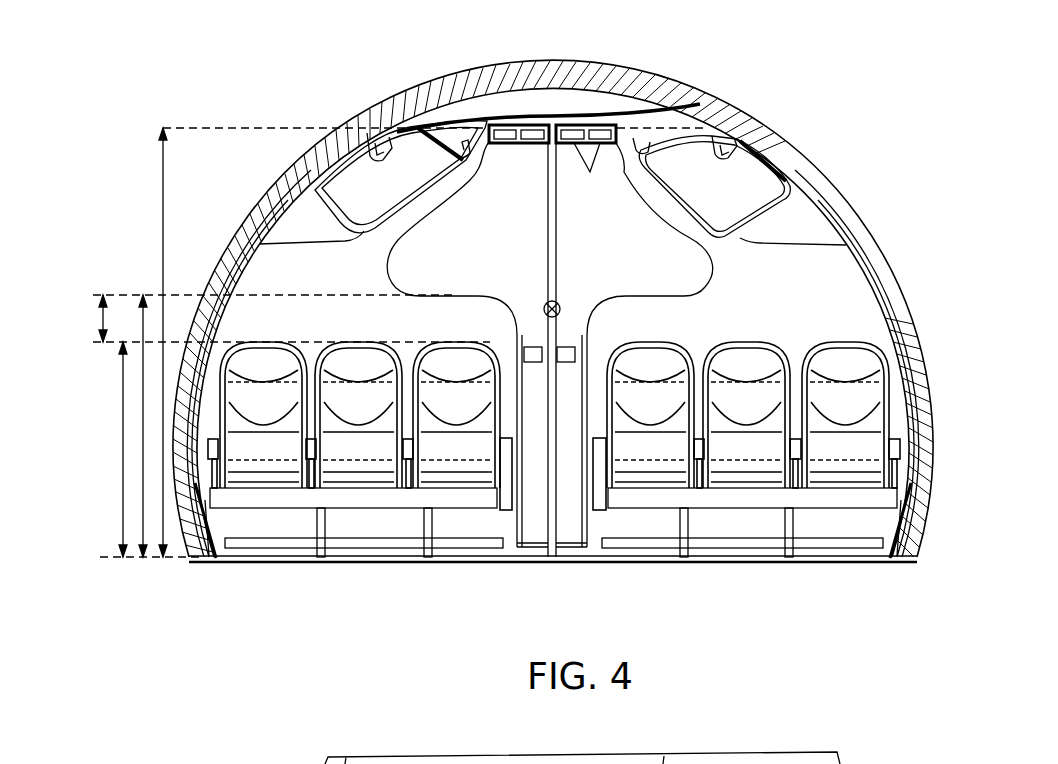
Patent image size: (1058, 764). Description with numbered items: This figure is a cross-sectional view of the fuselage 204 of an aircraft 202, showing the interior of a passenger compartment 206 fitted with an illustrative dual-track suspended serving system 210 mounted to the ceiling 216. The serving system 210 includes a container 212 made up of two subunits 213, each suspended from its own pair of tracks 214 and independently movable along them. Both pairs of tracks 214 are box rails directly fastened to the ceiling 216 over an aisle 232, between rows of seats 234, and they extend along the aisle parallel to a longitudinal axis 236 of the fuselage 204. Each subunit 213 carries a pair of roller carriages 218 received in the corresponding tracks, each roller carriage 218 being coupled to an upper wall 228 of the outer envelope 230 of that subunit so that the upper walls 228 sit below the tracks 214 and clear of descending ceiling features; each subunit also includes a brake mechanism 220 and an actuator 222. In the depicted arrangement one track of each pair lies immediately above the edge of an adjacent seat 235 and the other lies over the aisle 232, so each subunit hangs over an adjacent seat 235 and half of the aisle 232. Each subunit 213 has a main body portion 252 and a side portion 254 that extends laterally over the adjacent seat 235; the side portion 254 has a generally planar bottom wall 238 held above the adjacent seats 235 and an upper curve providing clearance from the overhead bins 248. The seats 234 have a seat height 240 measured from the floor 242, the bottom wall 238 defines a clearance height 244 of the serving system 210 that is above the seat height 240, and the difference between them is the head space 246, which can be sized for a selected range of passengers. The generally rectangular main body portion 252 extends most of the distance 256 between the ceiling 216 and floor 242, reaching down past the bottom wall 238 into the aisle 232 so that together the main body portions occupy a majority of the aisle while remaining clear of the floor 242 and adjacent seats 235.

The aircraft 202 is at (193, 100).
The fuselage 204 is at (776, 149).
The passenger compartment 206 is at (860, 316).
The suspended serving system 210 is at (347, 100).
The container 212 is at (370, 258).
The subunits 213 is at (455, 283).
The tracks 214 is at (491, 125).
The ceiling 216 is at (608, 122).
The roller carriages 218 is at (587, 174).
The brake mechanism 220 is at (470, 118).
The actuator 222 is at (517, 350).
The upper wall 228 is at (559, 146).
The outer envelope 230 is at (695, 290).
The aisle 232 is at (511, 560).
The seats 234 is at (862, 362).
The adjacent seat 235 is at (427, 477).
The longitudinal axis 236 is at (540, 304).
The bottom wall 238 is at (618, 300).
The seat height 240 is at (123, 497).
The floor 242 is at (268, 563).
The clearance height 244 is at (142, 404).
The head space 246 is at (103, 325).
The overhead bins 248 is at (713, 150).
The main body portion 252 is at (569, 541).
The side portion 254 is at (680, 270).
The distance 256 is at (163, 447).